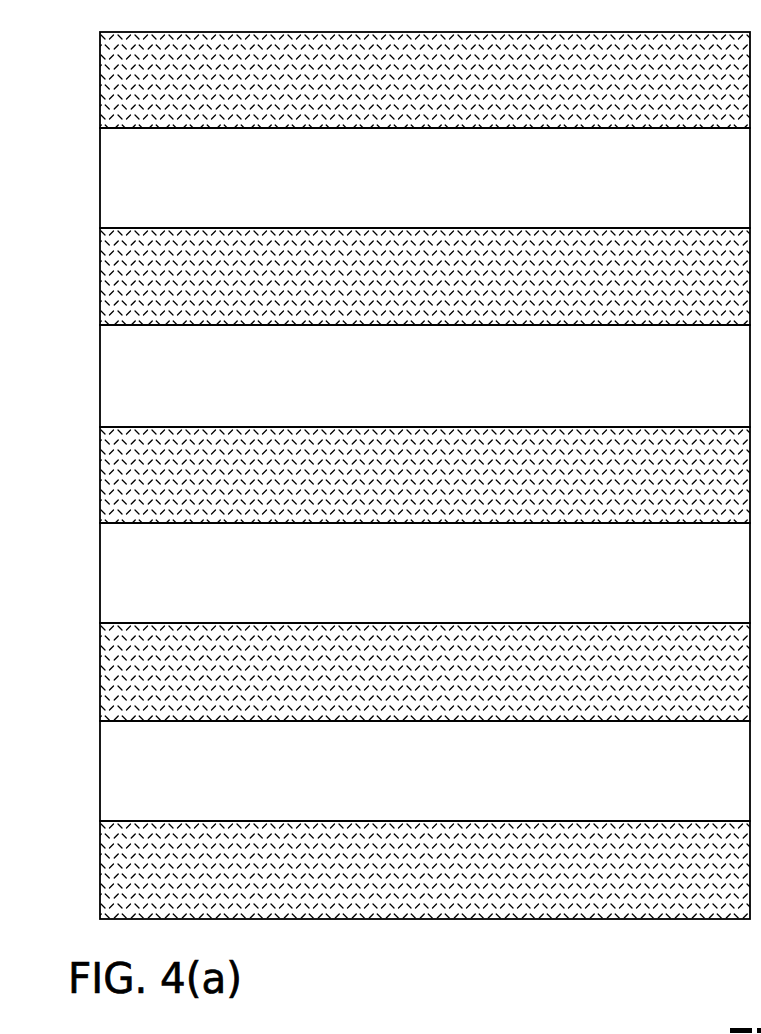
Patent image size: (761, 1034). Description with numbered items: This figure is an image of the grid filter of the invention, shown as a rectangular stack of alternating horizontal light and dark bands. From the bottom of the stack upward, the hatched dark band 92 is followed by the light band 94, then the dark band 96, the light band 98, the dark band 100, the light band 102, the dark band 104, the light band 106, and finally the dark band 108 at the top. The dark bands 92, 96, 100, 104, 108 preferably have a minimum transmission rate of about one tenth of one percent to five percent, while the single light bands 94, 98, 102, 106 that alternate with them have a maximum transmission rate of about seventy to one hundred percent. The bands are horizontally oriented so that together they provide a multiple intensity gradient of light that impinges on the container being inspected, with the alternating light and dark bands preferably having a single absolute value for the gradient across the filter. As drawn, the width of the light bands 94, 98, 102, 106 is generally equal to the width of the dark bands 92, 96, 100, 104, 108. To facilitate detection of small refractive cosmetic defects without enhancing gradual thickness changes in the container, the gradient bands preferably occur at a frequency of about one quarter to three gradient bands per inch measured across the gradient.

The dark band 92 is at (100, 900).
The light band 94 is at (100, 782).
The dark band 96 is at (100, 675).
The light band 98 is at (100, 585).
The dark band 100 is at (100, 482).
The light band 102 is at (100, 385).
The dark band 104 is at (100, 295).
The light band 106 is at (100, 180).
The dark band 108 is at (100, 78).